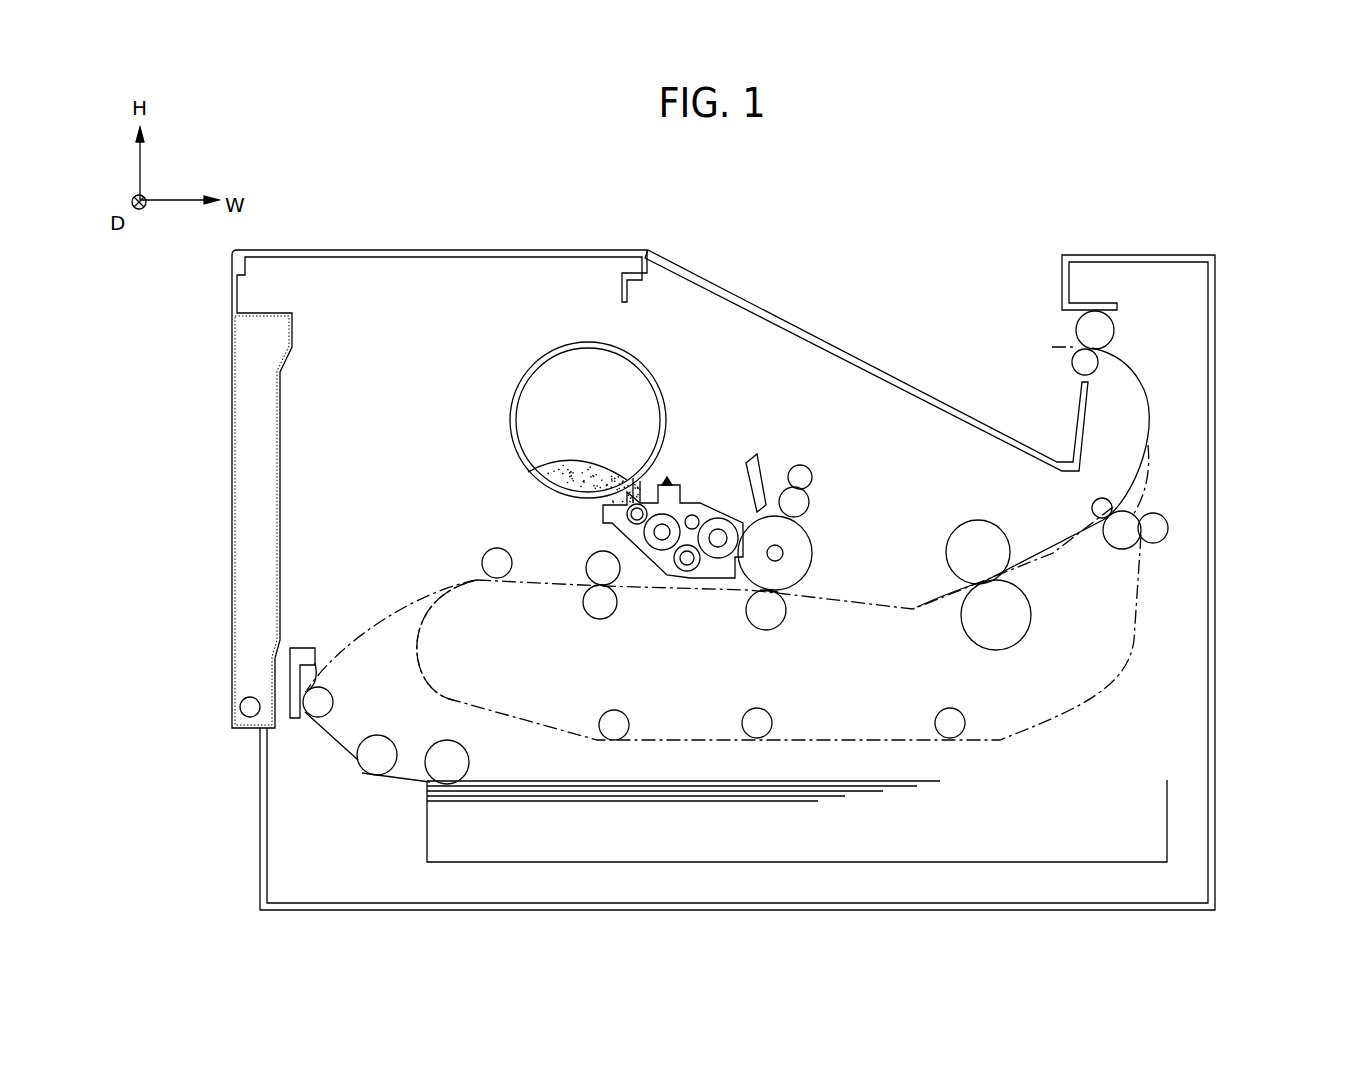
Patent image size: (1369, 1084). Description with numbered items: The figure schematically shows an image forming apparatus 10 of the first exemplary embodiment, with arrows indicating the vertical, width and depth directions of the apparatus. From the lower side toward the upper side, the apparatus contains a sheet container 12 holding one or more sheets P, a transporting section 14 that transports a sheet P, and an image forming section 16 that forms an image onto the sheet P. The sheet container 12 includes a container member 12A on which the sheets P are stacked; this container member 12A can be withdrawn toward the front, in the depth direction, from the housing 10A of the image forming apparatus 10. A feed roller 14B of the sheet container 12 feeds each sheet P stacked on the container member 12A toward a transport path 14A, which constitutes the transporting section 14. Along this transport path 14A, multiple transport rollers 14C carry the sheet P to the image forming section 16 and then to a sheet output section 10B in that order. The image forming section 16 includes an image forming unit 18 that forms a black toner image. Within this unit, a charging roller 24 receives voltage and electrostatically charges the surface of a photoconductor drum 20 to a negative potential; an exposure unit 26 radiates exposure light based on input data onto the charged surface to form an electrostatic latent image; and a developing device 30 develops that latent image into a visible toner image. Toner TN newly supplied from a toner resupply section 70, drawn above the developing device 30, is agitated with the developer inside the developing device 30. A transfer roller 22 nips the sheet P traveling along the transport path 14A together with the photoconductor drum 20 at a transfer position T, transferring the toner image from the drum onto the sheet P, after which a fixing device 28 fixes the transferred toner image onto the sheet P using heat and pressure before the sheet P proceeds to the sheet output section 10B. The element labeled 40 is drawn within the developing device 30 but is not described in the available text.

The image forming apparatus 10 is at (761, 537).
The housing 10A is at (1217, 520).
The sheet output section 10B is at (910, 385).
The sheet container 12 is at (682, 782).
The container member 12A is at (672, 862).
The transporting section 14 is at (748, 592).
The transport path 14A is at (535, 592).
The feed roller 14B is at (456, 760).
The transport rollers 14C is at (497, 548).
The image forming section 16 is at (805, 355).
The image forming unit 18 is at (700, 504).
The photoconductor drum 20 is at (812, 550).
The transfer roller 22 is at (782, 628).
The charging roller 24 is at (809, 501).
The exposure unit 26 is at (762, 470).
The fixing device 28 is at (1024, 546).
The developing device 30 is at (638, 511).
The toner supply roller 40 is at (615, 508).
The toner resupply section 70 is at (554, 397).
The toner TN is at (530, 470).
The transfer position T is at (752, 593).
The sheet P is at (700, 785).